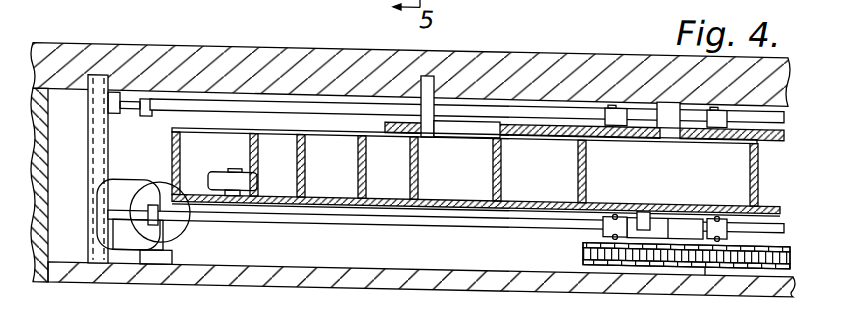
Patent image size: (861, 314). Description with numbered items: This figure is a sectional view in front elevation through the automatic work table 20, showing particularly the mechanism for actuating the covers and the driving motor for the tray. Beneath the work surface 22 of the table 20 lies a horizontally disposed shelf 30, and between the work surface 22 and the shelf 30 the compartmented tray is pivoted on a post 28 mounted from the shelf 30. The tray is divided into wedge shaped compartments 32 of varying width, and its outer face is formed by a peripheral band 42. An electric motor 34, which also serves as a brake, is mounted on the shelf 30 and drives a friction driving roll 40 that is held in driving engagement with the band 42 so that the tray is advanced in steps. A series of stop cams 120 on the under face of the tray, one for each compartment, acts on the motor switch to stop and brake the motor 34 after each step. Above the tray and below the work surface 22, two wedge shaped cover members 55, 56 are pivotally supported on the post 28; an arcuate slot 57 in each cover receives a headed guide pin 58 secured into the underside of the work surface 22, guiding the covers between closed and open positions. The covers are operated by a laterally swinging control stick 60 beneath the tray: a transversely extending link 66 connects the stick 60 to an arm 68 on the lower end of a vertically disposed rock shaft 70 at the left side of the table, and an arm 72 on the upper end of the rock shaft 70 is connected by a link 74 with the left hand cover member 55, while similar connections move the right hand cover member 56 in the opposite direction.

The work table 20 is at (98, 40).
The work surface 22 is at (197, 48).
The post 28 is at (672, 97).
The shelf 30 is at (417, 264).
The compartments 32 is at (280, 167).
The electric motor 34 is at (143, 174).
The friction driving roll 40 is at (222, 180).
The peripheral band 42 is at (206, 190).
The cover member 55 is at (612, 118).
The cover member 56 is at (707, 119).
The arcuate slot 57 is at (470, 119).
The guide pin 58 is at (432, 79).
The control stick 60 is at (663, 212).
The link 66 is at (535, 217).
The arm 68 is at (142, 241).
The rock shaft 70 is at (99, 280).
The arm 72 is at (133, 100).
The link 74 is at (542, 106).
The stop cams 120 is at (521, 8).